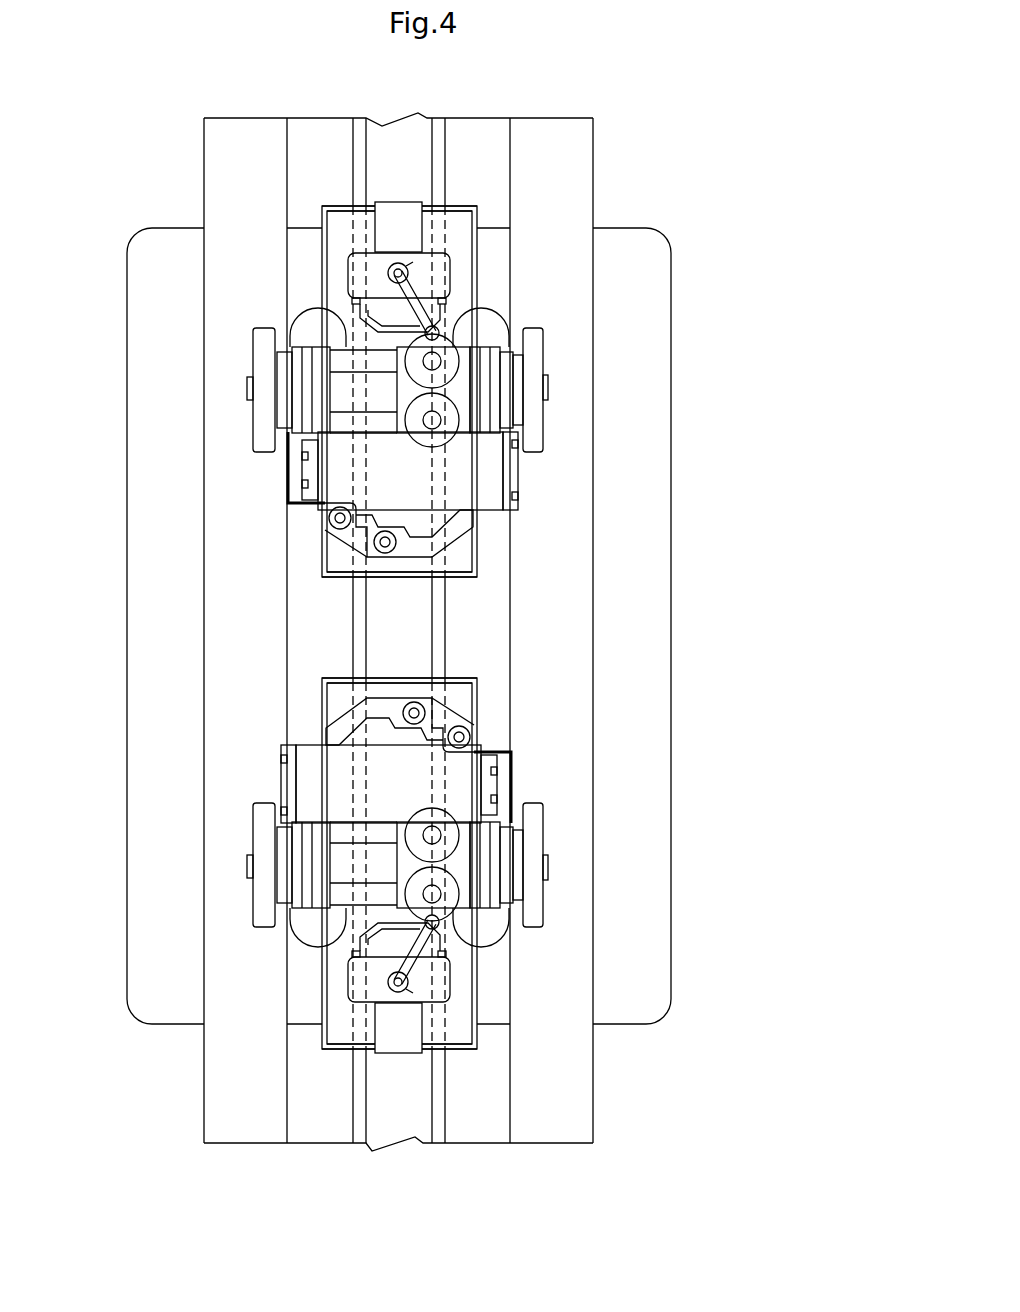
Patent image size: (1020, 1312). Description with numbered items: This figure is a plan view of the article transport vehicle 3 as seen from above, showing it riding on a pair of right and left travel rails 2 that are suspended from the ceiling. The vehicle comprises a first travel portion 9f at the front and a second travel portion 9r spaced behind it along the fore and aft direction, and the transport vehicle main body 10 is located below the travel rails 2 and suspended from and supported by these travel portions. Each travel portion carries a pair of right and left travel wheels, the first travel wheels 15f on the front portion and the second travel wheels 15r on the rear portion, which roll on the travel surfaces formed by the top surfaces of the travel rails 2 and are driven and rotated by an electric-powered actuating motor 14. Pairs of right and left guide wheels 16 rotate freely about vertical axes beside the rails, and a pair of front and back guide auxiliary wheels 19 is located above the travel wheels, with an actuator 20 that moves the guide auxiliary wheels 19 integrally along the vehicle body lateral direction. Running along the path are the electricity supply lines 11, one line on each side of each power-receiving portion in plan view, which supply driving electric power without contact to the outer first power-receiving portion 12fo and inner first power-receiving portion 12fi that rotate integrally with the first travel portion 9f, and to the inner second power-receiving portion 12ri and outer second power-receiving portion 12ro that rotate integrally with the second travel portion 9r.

The travel rails 2 is at (223, 620).
The article transport vehicle 3 is at (701, 491).
The first travel portion 9f is at (539, 238).
The second travel portion 9r is at (541, 1041).
The transport vehicle main body 10 is at (422, 638).
The electricity supply lines 11 is at (358, 153).
The outer first power-receiving portion 12fo is at (462, 222).
The inner first power-receiving portion 12fi is at (462, 558).
The inner second power-receiving portion 12ri is at (462, 702).
The outer second power-receiving portion 12ro is at (455, 1038).
The actuating motor 14 is at (483, 500).
The first travel wheels 15f is at (263, 360).
The second travel wheels 15r is at (262, 895).
The guide wheels 16 is at (317, 320).
The guide auxiliary wheels 19 is at (452, 428).
The actuator 20 is at (399, 213).